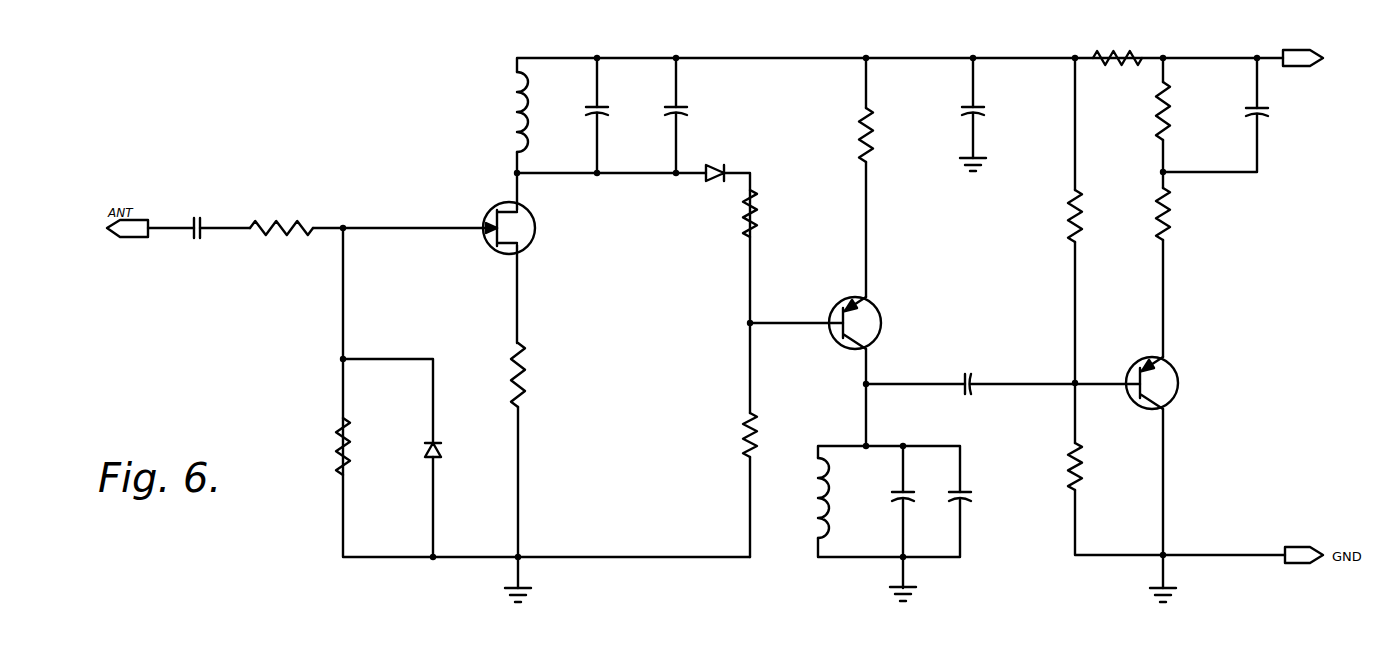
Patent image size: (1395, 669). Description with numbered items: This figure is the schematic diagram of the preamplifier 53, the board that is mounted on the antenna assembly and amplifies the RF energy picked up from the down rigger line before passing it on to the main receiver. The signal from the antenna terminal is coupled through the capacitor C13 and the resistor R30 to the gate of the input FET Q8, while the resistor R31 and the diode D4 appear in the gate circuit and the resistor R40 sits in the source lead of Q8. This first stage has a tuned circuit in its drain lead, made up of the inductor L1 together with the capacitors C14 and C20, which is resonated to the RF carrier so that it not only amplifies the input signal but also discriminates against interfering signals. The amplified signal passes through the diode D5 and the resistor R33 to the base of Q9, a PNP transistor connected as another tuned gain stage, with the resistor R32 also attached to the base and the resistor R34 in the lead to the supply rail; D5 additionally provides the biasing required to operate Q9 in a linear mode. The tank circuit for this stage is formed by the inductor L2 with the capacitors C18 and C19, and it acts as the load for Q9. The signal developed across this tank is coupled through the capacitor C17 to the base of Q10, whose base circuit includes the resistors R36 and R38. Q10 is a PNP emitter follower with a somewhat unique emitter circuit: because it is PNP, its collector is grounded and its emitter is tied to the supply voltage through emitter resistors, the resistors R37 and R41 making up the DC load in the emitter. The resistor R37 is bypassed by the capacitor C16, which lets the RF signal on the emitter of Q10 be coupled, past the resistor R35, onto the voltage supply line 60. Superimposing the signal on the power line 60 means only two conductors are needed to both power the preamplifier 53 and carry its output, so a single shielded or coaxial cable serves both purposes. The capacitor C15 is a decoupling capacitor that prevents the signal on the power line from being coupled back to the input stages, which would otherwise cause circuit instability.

The preamplifier 53 is at (428, 147).
The voltage supply line 60 is at (1296, 54).
The resistor R30 is at (281, 218).
The resistor R31 is at (319, 446).
The resistor R32 is at (723, 435).
The resistor R33 is at (768, 213).
The resistor R34 is at (844, 135).
The resistor R35 is at (1117, 48).
The resistor R36 is at (1053, 216).
The emitter resistor R37 is at (1144, 111).
The resistor R38 is at (1092, 466).
The resistor R40 is at (538, 375).
The emitter resistor R41 is at (1182, 214).
The coupling capacitor C13 is at (191, 238).
The tuned circuit capacitor C14 is at (608, 102).
The decoupling capacitor C15 is at (990, 111).
The bypass capacitor C16 is at (1275, 113).
The coupling capacitor C17 is at (963, 375).
The tank circuit capacitor C18 is at (973, 507).
The tank circuit capacitor C19 is at (888, 507).
The tuned circuit capacitor C20 is at (686, 102).
The inductor L1 is at (498, 112).
The inductor L2 is at (801, 498).
The diode D4 is at (447, 452).
The diode D5 is at (714, 163).
The input FET Q8 is at (523, 228).
The PNP transistor Q9 is at (868, 323).
The emitter follower transistor Q10 is at (1170, 381).